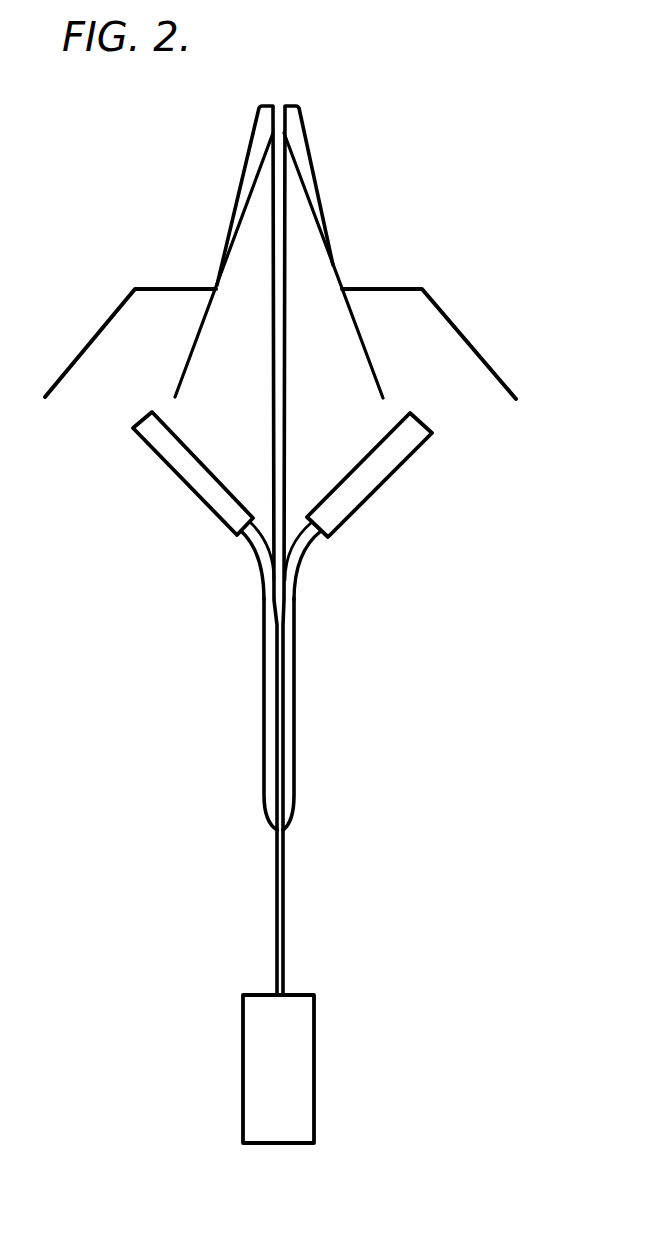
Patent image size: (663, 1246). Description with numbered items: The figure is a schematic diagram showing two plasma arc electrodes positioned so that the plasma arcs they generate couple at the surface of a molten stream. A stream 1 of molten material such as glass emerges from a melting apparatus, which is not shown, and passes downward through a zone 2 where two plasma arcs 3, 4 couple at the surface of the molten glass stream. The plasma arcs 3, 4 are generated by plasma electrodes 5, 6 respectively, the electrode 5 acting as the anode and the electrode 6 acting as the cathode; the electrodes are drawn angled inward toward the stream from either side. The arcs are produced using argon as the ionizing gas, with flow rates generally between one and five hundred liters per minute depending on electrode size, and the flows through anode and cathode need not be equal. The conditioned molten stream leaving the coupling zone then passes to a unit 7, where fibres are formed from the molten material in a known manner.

The stream 1 is at (285, 292).
The zone 2 is at (302, 575).
The plasma arc 3 is at (255, 550).
The plasma arc 4 is at (303, 545).
The plasma electrode 5 is at (168, 458).
The plasma electrode 6 is at (400, 453).
The unit 7 is at (257, 1053).